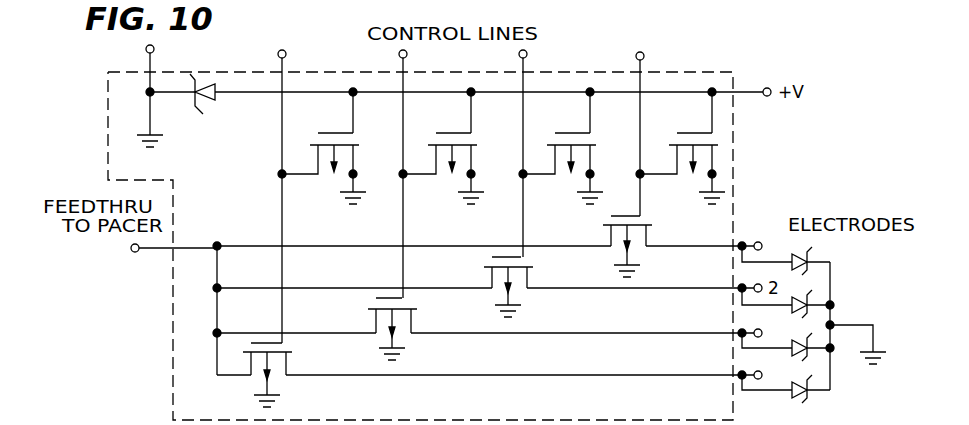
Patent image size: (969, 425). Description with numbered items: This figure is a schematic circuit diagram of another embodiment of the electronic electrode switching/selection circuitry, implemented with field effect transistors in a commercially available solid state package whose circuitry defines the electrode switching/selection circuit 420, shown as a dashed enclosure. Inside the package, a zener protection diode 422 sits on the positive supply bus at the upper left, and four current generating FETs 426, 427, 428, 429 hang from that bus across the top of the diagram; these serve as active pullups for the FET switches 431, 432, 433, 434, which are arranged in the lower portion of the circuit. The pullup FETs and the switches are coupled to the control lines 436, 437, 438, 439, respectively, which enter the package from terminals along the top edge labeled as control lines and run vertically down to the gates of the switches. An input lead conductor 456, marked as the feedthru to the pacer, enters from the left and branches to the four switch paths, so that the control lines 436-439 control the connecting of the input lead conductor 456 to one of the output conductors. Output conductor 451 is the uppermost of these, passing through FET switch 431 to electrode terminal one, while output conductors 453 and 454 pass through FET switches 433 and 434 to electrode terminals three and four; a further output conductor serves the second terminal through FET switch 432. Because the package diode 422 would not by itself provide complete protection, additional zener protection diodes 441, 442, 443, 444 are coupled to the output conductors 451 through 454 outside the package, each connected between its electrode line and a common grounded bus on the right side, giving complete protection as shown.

The switching/selection circuit 420 is at (175, 342).
The zener protection diode 422 is at (199, 80).
The current generating FET 426 is at (688, 128).
The current generating FET 427 is at (577, 132).
The current generating FET 428 is at (468, 138).
The current generating FET 429 is at (326, 144).
The FET switch 431 is at (604, 216).
The FET switch 432 is at (493, 257).
The FET switch 433 is at (378, 298).
The FET switch 434 is at (269, 345).
The control line 436 is at (642, 83).
The control line 437 is at (524, 72).
The control line 438 is at (405, 82).
The control line 439 is at (284, 74).
The zener protection diode 441 is at (808, 260).
The zener protection diode 442 is at (812, 298).
The zener protection diode 443 is at (810, 352).
The zener protection diode 444 is at (810, 394).
The output conductor 451 is at (735, 244).
The output conductor 453 is at (662, 334).
The output conductor 454 is at (660, 375).
The input lead conductor 456 is at (160, 250).